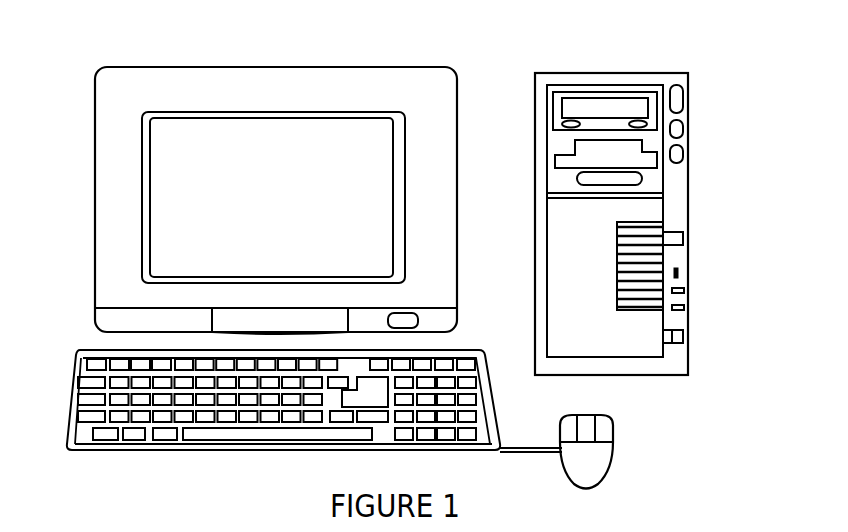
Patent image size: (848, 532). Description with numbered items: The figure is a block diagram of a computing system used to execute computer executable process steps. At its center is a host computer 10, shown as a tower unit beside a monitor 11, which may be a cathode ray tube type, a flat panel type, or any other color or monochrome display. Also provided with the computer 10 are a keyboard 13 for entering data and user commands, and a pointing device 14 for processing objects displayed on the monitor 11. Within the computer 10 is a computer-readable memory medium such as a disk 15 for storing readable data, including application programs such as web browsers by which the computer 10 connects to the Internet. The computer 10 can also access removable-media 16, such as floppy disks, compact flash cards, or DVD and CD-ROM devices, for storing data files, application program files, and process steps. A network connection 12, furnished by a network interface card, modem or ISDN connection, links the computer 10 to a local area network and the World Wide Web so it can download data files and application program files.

The host computer 10 is at (614, 73).
The monitor 11 is at (207, 112).
The network connection 12 is at (684, 291).
The keyboard 13 is at (67, 428).
The pointing device 14 is at (613, 442).
The disk 15 is at (647, 123).
The removable-media 16 is at (642, 178).